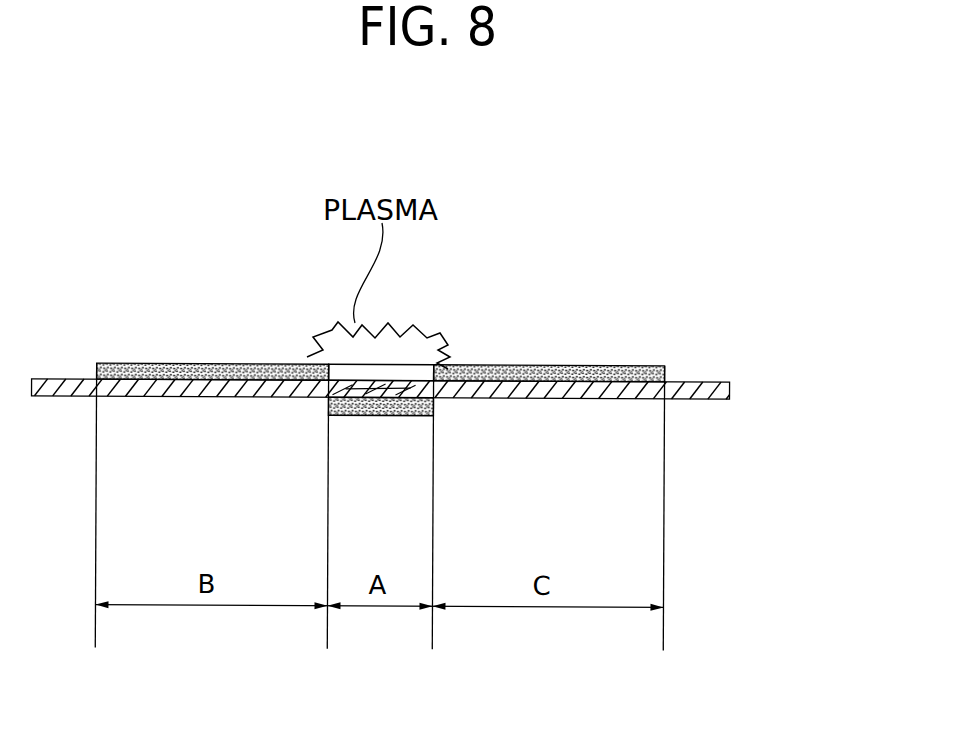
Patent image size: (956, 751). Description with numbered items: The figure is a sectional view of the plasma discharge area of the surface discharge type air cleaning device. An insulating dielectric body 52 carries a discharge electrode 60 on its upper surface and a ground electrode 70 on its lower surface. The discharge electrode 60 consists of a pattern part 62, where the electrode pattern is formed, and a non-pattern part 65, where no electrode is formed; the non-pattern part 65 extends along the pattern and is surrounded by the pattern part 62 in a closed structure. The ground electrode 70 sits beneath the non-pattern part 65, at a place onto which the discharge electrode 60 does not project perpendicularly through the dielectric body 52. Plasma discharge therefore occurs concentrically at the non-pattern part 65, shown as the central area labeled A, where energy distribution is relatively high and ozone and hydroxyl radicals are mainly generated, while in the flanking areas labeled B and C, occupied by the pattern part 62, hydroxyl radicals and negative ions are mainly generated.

The insulating dielectric body 52 is at (731, 391).
The discharge electrode 60 is at (178, 352).
The pattern part 62 is at (623, 366).
The non-pattern part 65 is at (397, 372).
The ground electrode 70 is at (395, 416).